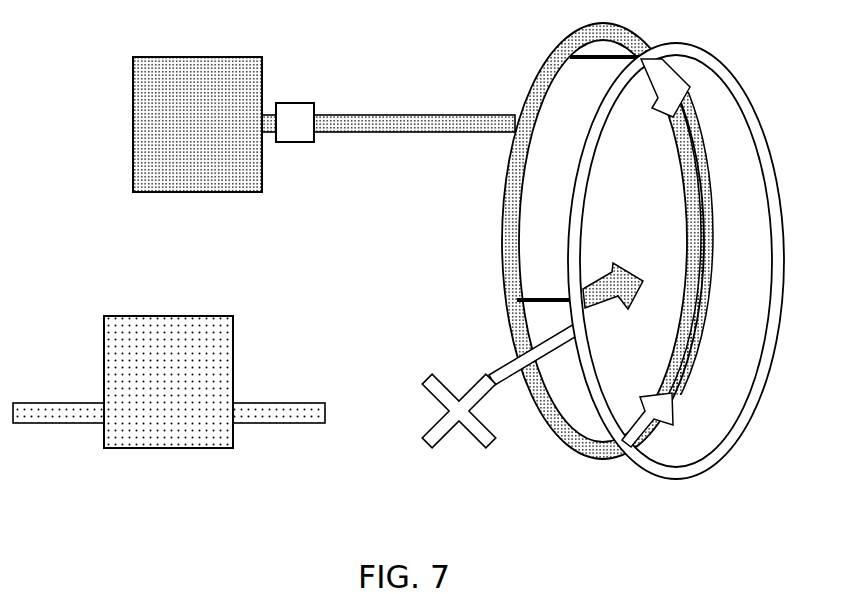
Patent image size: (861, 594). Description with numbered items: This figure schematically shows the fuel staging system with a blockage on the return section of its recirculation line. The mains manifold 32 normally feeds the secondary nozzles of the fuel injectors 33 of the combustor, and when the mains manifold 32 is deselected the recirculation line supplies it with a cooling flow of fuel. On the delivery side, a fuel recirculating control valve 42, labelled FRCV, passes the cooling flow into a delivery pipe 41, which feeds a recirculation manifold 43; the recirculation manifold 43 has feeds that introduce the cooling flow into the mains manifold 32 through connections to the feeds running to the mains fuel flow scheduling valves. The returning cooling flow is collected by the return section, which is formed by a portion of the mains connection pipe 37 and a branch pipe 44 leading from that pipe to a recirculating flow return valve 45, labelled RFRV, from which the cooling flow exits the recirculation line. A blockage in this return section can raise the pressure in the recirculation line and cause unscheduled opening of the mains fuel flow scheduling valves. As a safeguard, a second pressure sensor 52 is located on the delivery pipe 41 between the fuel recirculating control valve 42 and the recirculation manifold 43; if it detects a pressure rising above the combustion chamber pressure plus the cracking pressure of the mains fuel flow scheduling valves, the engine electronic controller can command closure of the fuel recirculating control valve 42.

The mains manifold 32 is at (760, 135).
The fuel injectors 33 is at (661, 393).
The mains connection pipe 37 is at (507, 385).
The delivery pipe 41 is at (349, 135).
The fuel recirculating control valve 42 is at (133, 127).
The recirculation manifold 43 is at (500, 242).
The branch pipe 44 is at (285, 405).
The recirculating flow return valve 45 is at (165, 315).
The second pressure sensor 52 is at (298, 103).